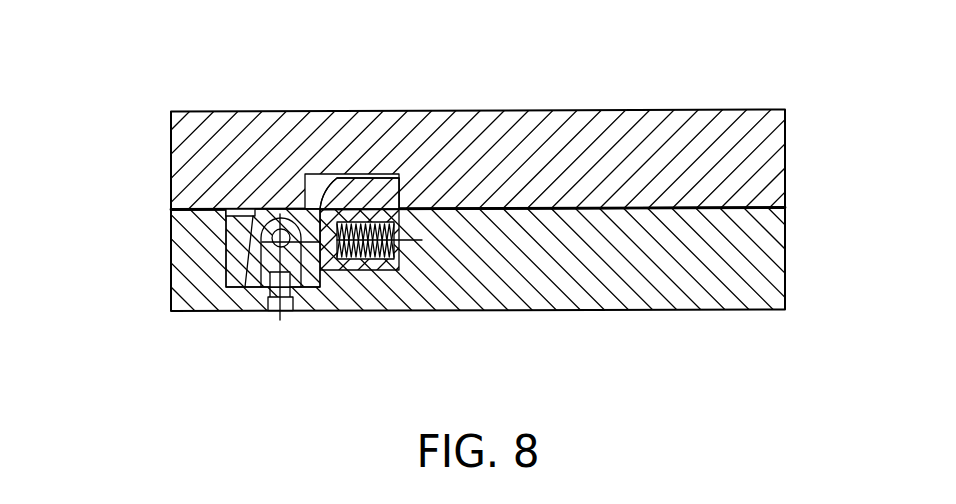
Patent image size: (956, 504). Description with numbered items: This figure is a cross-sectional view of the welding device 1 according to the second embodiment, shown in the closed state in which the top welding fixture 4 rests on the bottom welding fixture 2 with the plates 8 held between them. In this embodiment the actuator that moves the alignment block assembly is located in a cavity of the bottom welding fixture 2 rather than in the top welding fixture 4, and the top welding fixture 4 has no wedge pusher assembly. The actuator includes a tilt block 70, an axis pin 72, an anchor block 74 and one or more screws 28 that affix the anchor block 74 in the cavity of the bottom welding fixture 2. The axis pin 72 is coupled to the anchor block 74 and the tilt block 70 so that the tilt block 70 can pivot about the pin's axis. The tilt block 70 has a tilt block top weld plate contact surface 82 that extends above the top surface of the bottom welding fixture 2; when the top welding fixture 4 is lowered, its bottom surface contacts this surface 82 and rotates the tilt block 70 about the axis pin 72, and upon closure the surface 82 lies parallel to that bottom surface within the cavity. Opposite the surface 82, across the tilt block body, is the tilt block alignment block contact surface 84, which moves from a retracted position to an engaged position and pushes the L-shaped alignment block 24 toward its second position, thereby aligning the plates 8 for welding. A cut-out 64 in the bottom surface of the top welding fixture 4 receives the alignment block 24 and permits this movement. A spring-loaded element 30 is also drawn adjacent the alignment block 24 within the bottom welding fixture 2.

The welding device 1 is at (469, 180).
The bottom welding fixture 2 is at (200, 234).
The top welding fixture 4 is at (195, 134).
The plates 8 is at (665, 207).
The alignment block 24 is at (365, 197).
The screws 28 is at (308, 262).
The spring housing 30 is at (389, 269).
The cut-out 64 is at (314, 186).
The tilt block 70 is at (235, 240).
The axis pin 72 is at (292, 312).
The anchor block 74 is at (270, 272).
The tilt block top weld plate contact surface 82 is at (237, 216).
The tilt block alignment block contact surface 84 is at (312, 253).